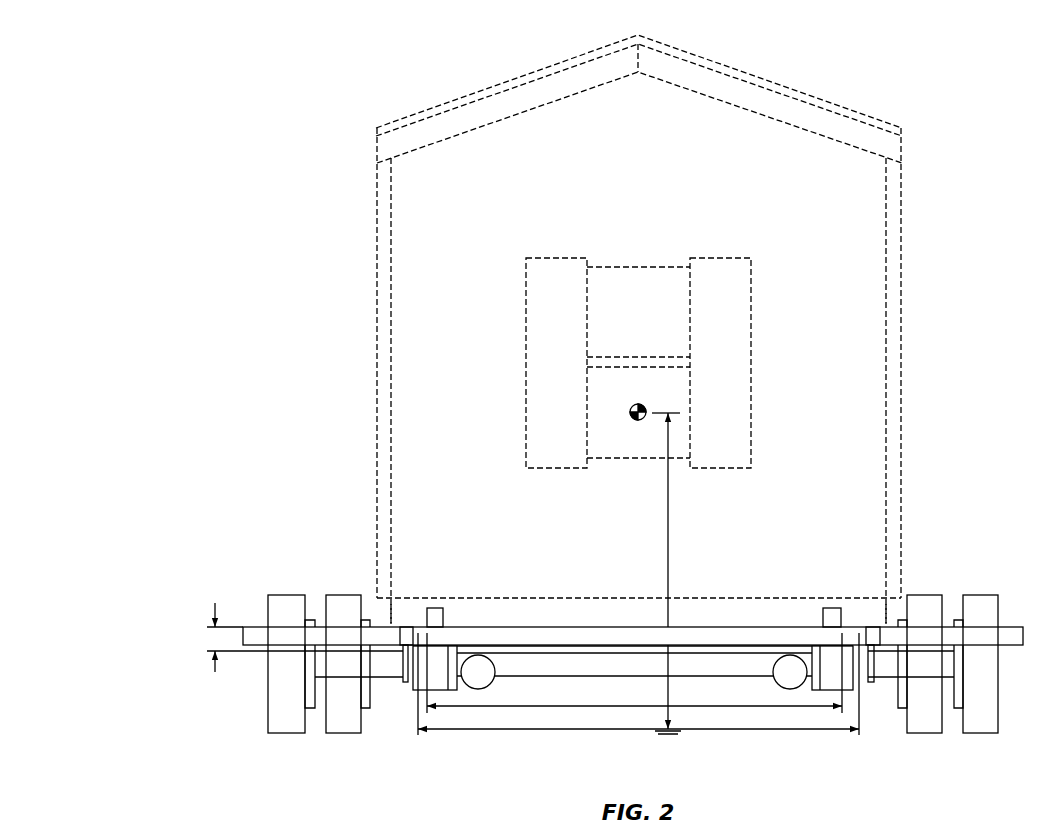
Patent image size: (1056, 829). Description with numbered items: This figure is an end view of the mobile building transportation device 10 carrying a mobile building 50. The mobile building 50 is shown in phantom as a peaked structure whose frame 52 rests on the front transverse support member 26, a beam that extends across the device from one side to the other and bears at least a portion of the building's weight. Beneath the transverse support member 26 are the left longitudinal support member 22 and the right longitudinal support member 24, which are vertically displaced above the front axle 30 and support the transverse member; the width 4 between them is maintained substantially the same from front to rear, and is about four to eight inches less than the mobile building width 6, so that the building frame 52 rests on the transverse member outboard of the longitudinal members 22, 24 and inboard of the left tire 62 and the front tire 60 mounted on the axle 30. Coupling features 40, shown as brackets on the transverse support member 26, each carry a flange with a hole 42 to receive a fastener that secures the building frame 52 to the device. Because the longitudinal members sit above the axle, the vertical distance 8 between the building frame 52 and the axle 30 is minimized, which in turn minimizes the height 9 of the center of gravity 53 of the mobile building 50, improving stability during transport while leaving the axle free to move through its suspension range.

The mobile building transportation device 10 is at (330, 517).
The mobile building 50 is at (903, 252).
The frame of the mobile building 52 is at (393, 604).
The center of gravity 53 is at (648, 404).
The height of center of gravity 9 is at (668, 560).
The front transverse support member 26 is at (1012, 627).
The front tire 60 is at (342, 595).
The left tire 62 is at (936, 595).
The front axle 30 is at (387, 665).
The coupling feature 40 is at (407, 627).
The hole 42 is at (872, 627).
The right longitudinal support member 24 is at (442, 604).
The left longitudinal support member 22 is at (830, 605).
The width 4 is at (555, 706).
The mobile building width 6 is at (503, 729).
The vertical distance 8 is at (215, 672).